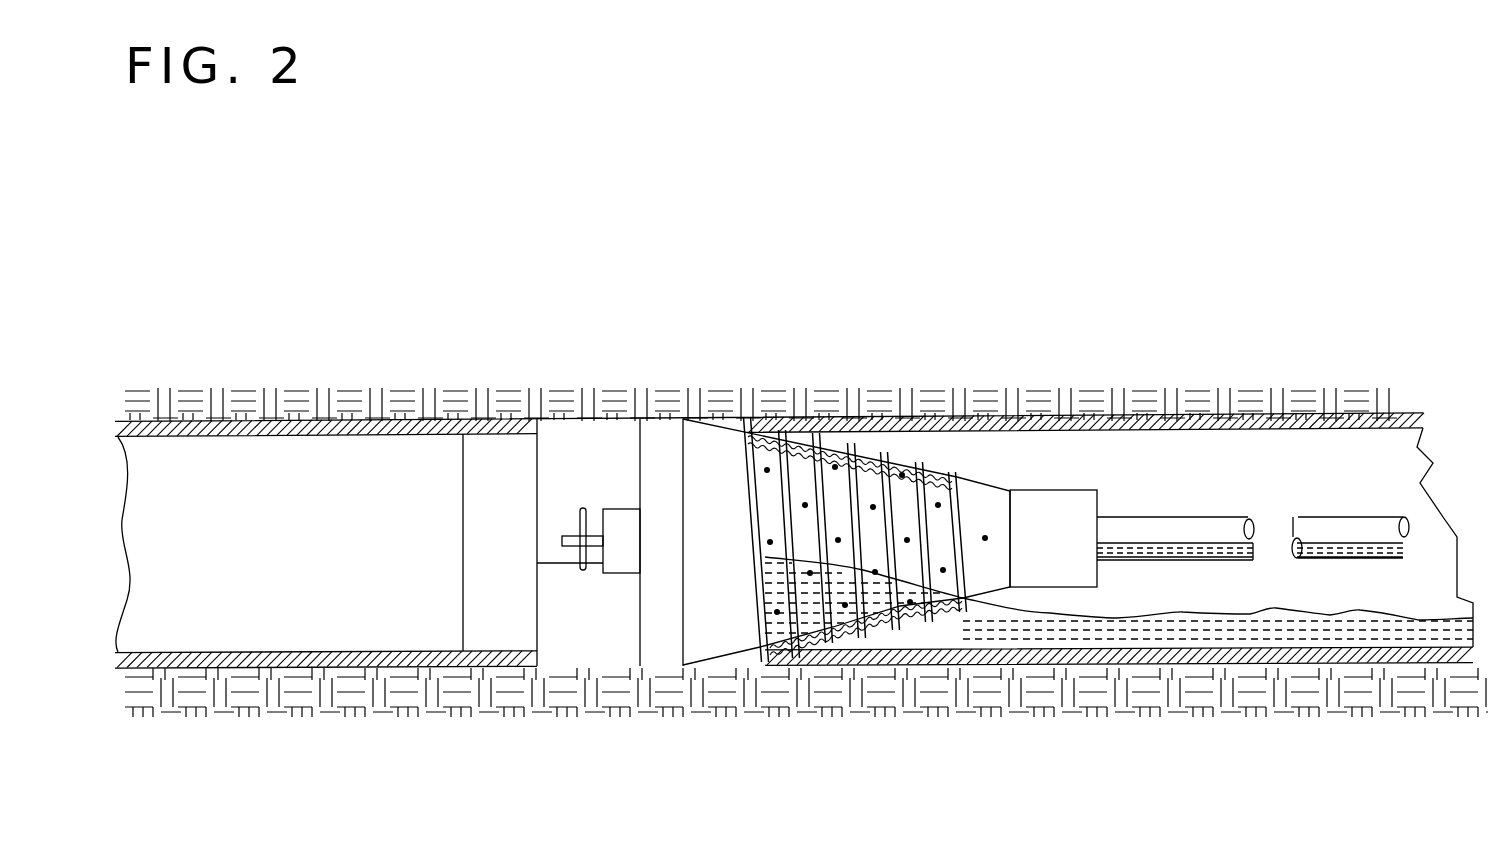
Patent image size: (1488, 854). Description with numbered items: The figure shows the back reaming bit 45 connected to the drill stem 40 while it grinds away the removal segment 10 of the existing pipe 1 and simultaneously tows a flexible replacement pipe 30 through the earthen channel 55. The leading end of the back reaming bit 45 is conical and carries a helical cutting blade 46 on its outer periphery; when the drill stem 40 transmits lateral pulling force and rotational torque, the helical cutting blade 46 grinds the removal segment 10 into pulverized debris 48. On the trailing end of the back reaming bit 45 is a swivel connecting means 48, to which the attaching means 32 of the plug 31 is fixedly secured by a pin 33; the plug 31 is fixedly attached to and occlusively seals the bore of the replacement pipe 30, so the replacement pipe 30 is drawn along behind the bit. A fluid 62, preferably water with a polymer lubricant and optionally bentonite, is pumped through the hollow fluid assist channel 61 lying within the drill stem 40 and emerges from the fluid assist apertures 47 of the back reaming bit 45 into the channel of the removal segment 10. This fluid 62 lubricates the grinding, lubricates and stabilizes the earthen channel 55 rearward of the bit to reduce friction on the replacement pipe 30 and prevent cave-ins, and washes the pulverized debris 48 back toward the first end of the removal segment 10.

The existing pipe 1 is at (330, 403).
The removal segment 10 is at (1150, 417).
The replacement pipe 30 is at (190, 422).
The plug 31 is at (478, 453).
The attaching means 32 is at (557, 550).
The pin 33 is at (583, 507).
The drill stem 40 is at (1340, 525).
The back reaming bit 45 is at (715, 612).
The helical cutting blade 46 is at (822, 498).
The fluid assist apertures 47 is at (907, 538).
The swivel connecting means 48 is at (623, 538).
The earthen channel 55 is at (590, 628).
The fluid assist channel 61 is at (1255, 530).
The fluid 62 is at (1170, 550).